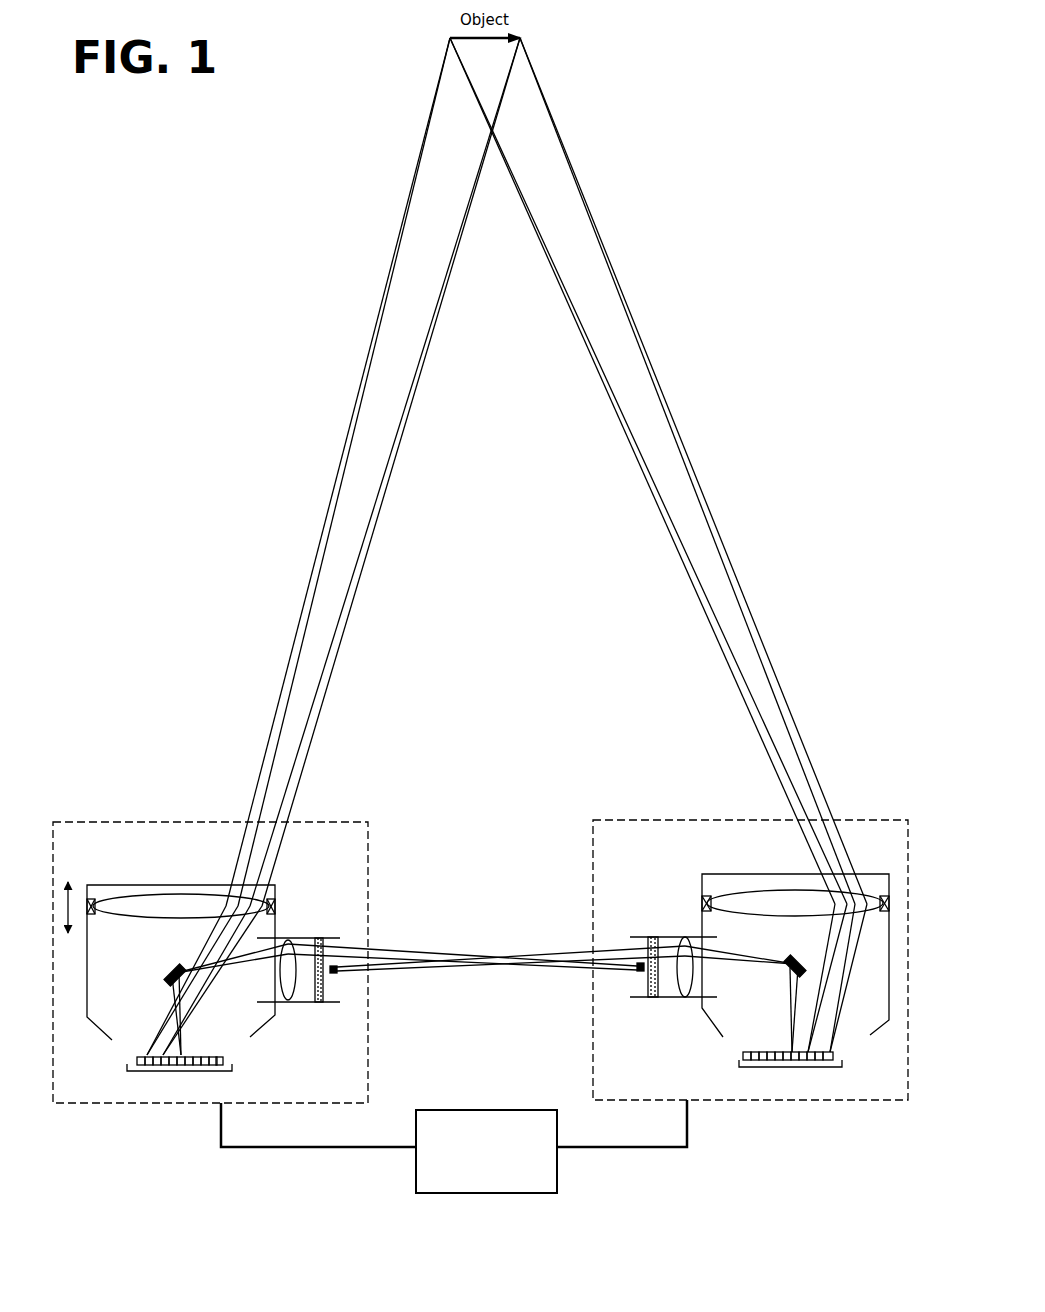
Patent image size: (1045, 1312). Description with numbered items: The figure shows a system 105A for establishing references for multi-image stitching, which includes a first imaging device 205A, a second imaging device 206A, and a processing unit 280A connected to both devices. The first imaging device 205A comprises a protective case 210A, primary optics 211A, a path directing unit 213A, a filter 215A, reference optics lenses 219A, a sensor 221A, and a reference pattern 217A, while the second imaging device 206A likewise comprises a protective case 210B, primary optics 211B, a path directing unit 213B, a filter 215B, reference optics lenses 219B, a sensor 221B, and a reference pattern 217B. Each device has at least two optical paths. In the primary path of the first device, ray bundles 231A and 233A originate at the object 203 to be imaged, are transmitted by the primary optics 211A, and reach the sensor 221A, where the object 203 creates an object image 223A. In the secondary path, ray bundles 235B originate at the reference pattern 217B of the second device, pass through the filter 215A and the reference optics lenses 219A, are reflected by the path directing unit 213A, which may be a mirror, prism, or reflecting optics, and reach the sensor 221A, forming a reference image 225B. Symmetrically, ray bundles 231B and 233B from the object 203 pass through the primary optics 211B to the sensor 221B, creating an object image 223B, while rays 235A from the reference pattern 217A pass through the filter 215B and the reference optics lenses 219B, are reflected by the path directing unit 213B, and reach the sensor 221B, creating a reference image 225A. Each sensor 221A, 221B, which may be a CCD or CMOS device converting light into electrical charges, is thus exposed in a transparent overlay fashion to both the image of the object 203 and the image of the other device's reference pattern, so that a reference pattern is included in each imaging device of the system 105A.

The system 105A is at (108, 178).
The object 203 is at (486, 44).
The first imaging device 205A is at (155, 822).
The second imaging device 206A is at (680, 820).
The protective case 210A is at (90, 1024).
The protective case 210B is at (884, 1022).
The primary optics 211A is at (163, 905).
The primary optics 211B is at (790, 904).
The path directing unit 213A is at (170, 968).
The path directing unit 213B is at (815, 949).
The filter 215A is at (324, 990).
The filter 215B is at (647, 987).
The reference pattern 217A is at (341, 966).
The reference pattern 217B is at (641, 974).
The reference optics lenses 219A is at (291, 982).
The reference optics lenses 219B is at (687, 975).
The sensor 221A is at (223, 1058).
The sensor 221B is at (742, 1057).
The object image 223A is at (145, 1050).
The object image 223B is at (834, 1050).
The reference image 225A is at (789, 1050).
The reference image 225B is at (183, 1052).
The ray bundle 231A is at (364, 372).
The ray bundle 231B is at (645, 337).
The ray bundle 233A is at (423, 373).
The ray bundle 233B is at (600, 367).
The rays 235A is at (565, 965).
The ray bundles 235B is at (406, 965).
The processing unit 280A is at (557, 1167).